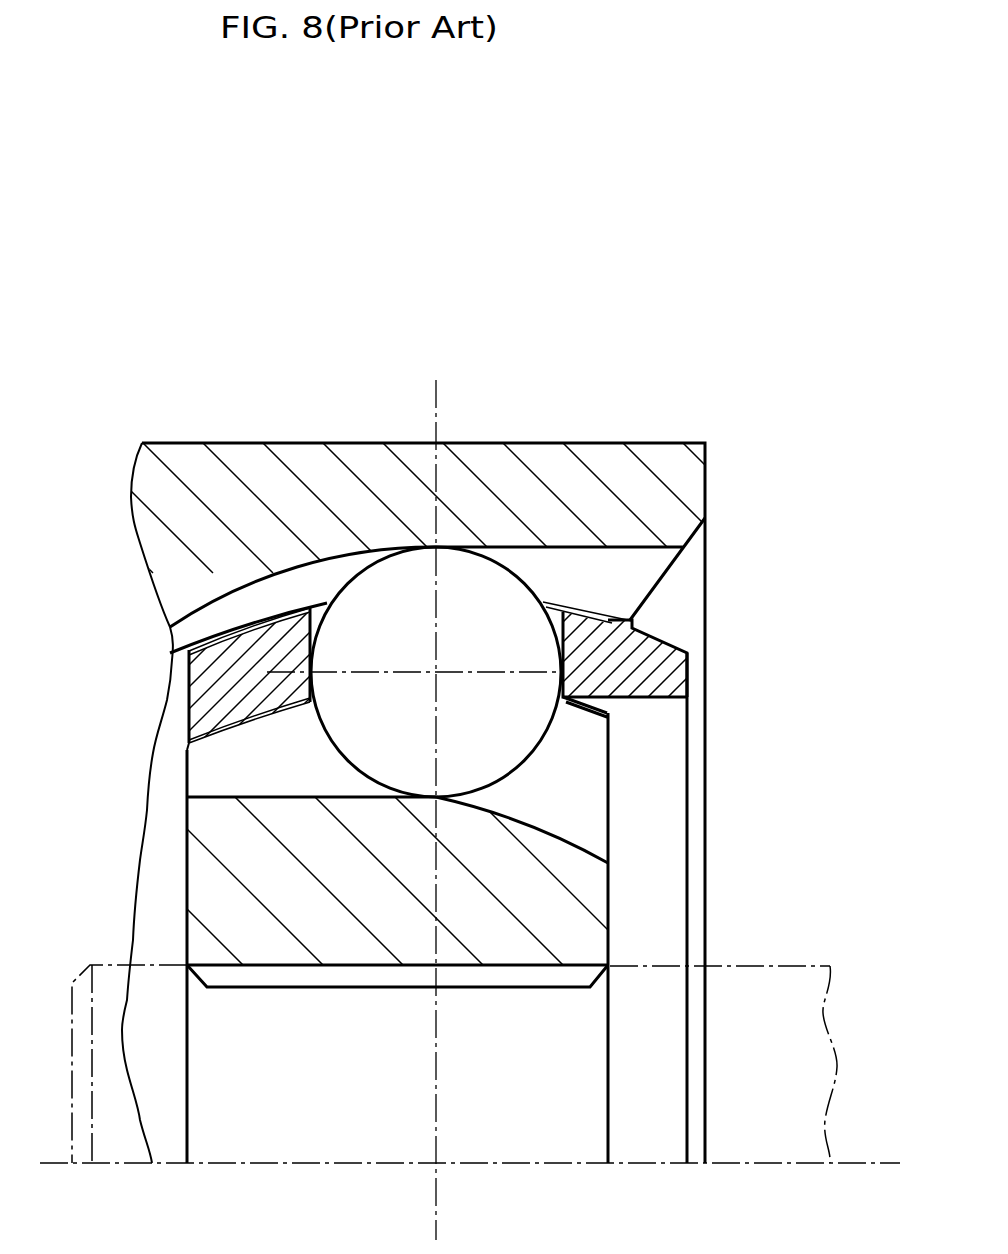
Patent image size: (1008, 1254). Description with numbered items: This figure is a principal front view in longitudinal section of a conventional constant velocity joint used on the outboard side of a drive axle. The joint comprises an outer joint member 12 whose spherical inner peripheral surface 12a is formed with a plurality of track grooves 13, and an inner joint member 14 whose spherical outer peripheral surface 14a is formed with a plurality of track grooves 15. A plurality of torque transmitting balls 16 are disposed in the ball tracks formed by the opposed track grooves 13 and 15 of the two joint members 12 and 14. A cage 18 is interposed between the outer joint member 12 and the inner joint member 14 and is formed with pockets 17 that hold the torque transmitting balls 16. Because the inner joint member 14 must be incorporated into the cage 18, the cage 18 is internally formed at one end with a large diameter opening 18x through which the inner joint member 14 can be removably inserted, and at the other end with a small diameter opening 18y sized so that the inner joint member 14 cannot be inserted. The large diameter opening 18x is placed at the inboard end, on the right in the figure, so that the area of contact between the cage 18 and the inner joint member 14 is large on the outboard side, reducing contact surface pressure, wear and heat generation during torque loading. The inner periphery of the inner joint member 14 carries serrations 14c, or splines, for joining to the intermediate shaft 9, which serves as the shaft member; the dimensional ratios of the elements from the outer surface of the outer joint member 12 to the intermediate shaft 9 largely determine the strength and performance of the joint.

The intermediate shaft 9 is at (768, 966).
The outer joint member 12 is at (167, 500).
The spherical inner peripheral surface 12a is at (255, 655).
The track grooves 13 is at (326, 598).
The inner joint member 14 is at (222, 905).
The spherical outer peripheral surface 14a is at (258, 708).
The serrations 14c is at (370, 988).
The track grooves 15 is at (560, 835).
The torque transmitting balls 16 is at (401, 583).
The pockets 17 is at (548, 628).
The cage 18 is at (662, 672).
The large diameter opening 18x is at (680, 697).
The small diameter opening 18y is at (185, 749).